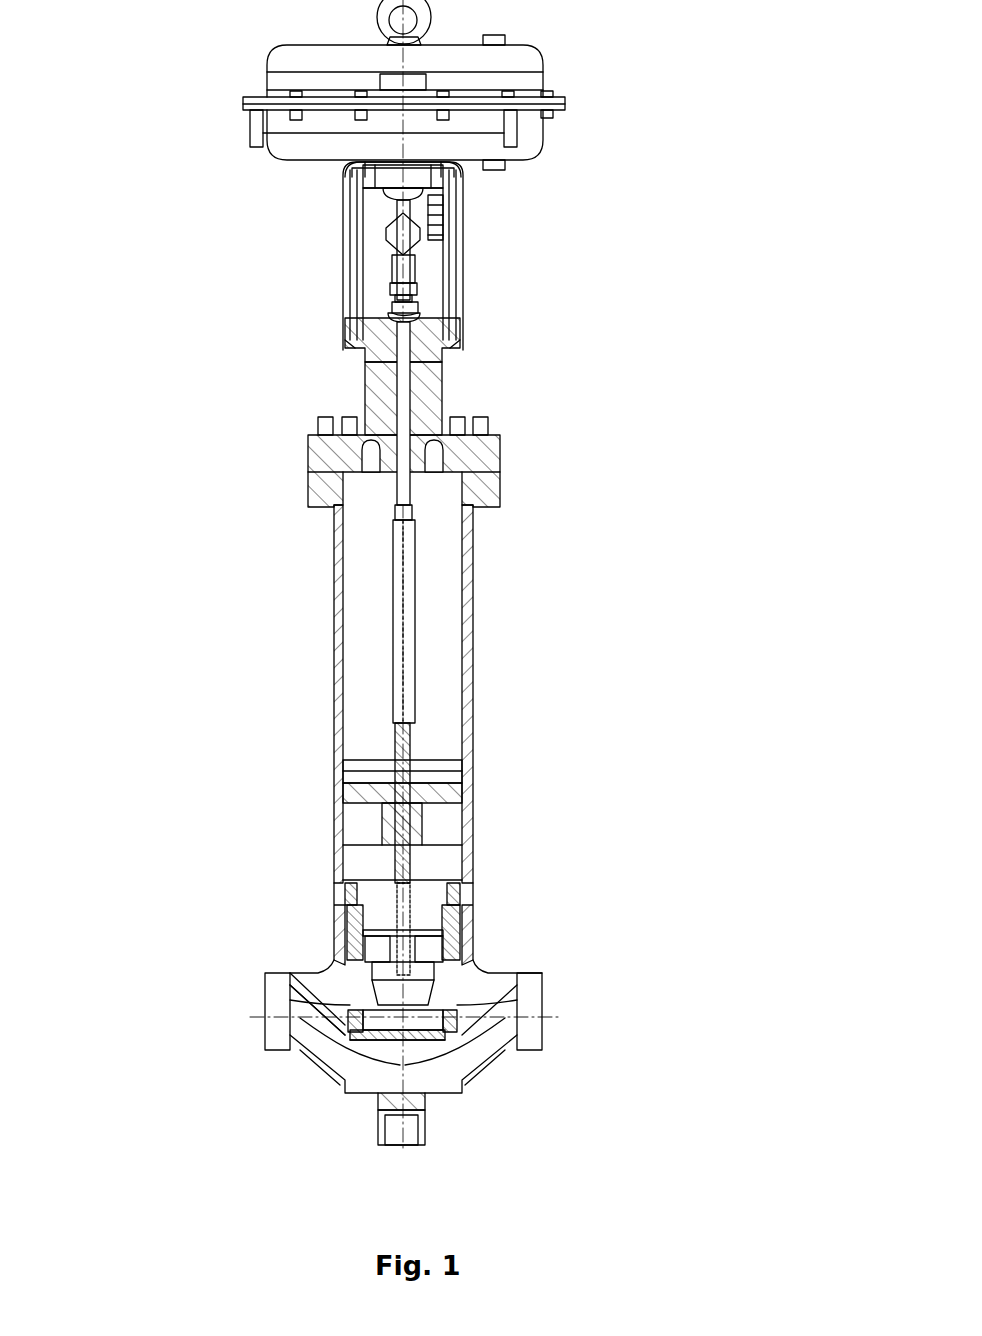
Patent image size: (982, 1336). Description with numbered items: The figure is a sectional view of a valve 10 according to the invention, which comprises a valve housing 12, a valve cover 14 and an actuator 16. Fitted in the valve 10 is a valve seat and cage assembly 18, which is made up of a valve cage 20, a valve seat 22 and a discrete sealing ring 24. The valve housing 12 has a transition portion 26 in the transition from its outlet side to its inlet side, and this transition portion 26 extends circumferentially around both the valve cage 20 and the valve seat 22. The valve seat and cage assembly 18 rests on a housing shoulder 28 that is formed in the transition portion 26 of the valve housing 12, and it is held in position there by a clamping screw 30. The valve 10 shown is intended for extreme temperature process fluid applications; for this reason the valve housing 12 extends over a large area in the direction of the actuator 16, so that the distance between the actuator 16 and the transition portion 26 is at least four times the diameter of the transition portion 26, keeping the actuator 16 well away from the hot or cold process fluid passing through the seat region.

The valve 10 is at (556, 596).
The valve housing 12 is at (475, 932).
The valve cover 14 is at (495, 425).
The actuator 16 is at (327, 63).
The valve seat and cage assembly 18 is at (385, 904).
The valve cage 20 is at (353, 947).
The valve seat 22 is at (447, 1005).
The discrete sealing ring 24 is at (353, 1033).
The transition portion 26 is at (352, 1012).
The housing shoulder 28 is at (357, 1040).
The clamping screw 30 is at (470, 885).